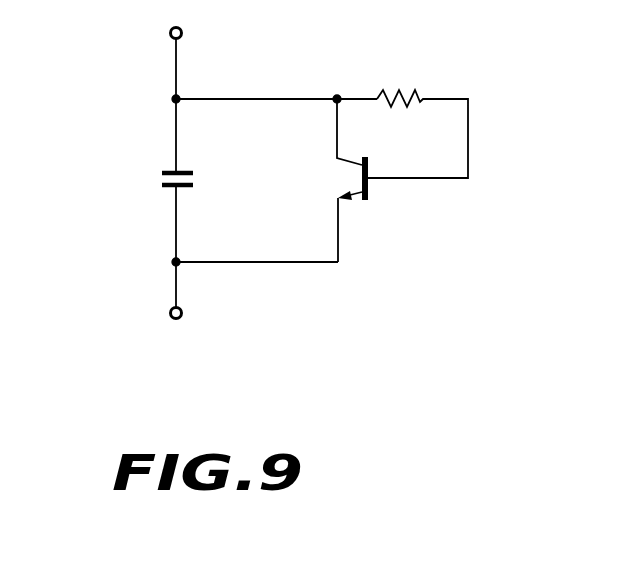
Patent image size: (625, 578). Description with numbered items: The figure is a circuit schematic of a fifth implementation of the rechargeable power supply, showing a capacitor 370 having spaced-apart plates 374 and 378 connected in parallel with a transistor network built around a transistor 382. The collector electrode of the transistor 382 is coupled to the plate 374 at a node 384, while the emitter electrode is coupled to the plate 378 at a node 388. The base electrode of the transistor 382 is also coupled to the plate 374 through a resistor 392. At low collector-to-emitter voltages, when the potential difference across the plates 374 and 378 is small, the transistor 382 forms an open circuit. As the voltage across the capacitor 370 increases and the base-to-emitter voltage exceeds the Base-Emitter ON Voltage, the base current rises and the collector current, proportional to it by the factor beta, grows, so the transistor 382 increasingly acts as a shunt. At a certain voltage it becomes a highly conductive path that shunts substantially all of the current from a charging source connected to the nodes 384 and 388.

The capacitor 370 is at (116, 182).
The plate 374 is at (163, 171).
The plate 378 is at (163, 187).
The transistor 382 is at (366, 201).
The node 384 is at (180, 27).
The node 388 is at (182, 318).
The resistor 392 is at (414, 90).